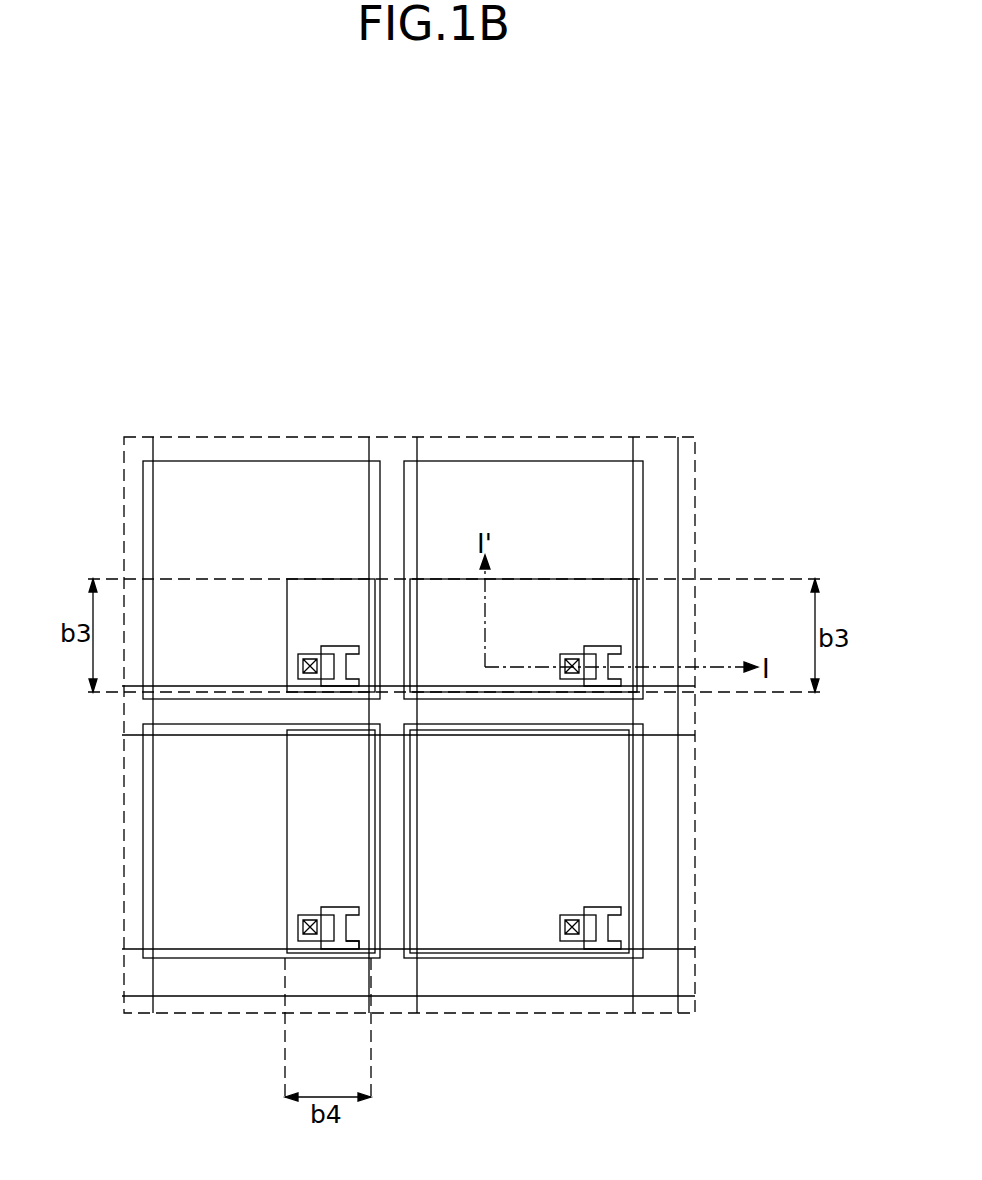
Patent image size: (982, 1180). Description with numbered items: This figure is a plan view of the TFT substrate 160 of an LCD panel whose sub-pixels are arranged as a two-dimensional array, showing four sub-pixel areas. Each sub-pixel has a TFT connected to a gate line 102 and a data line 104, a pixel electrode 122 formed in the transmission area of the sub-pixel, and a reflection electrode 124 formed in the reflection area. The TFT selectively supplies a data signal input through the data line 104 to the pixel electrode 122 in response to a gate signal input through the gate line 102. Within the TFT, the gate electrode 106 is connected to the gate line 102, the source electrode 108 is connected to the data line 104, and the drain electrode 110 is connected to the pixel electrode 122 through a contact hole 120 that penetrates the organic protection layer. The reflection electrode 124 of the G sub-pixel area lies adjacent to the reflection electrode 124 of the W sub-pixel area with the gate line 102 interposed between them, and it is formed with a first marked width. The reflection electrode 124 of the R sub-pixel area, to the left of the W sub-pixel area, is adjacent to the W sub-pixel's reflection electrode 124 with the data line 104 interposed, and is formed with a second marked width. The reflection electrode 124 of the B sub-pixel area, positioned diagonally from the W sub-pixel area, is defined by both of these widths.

The TFT substrate 160 is at (772, 500).
The gate line 102 is at (697, 728).
The data line 104 is at (655, 1014).
The gate electrode 106 is at (338, 907).
The source electrode 108 is at (352, 949).
The drain electrode 110 is at (310, 941).
The contact hole 120 is at (298, 921).
The pixel electrode 122 is at (143, 537).
The reflection electrode 124 is at (332, 579).